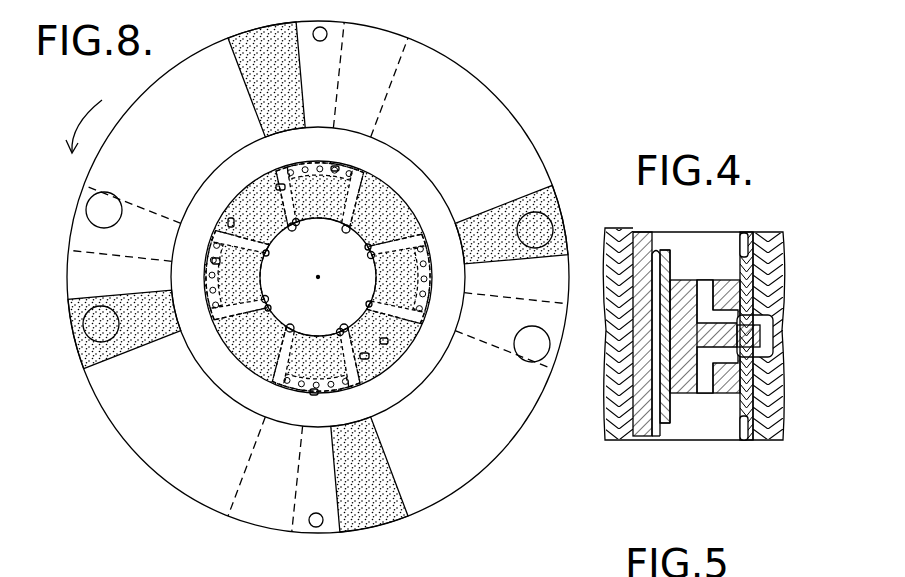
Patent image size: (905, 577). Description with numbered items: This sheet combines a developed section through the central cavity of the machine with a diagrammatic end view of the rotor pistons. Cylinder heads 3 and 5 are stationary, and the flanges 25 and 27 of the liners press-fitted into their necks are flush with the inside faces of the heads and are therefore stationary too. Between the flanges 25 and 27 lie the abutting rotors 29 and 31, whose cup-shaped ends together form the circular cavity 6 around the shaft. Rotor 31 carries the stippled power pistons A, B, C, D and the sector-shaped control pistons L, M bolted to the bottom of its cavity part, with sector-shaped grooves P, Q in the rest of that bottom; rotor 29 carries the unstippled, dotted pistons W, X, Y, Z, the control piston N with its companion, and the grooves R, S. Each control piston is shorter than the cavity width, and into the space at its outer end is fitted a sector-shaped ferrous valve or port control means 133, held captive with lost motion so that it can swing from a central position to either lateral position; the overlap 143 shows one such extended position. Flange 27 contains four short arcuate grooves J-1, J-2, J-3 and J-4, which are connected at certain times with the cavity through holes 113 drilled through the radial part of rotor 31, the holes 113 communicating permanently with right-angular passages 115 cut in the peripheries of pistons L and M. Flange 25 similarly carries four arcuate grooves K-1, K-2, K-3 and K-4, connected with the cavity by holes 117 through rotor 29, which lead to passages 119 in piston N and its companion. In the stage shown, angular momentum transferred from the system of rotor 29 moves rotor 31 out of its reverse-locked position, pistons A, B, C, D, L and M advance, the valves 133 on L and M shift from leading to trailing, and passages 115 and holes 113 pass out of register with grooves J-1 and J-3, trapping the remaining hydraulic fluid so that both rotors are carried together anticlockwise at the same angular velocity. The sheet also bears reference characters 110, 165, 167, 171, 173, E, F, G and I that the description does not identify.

In FIG. 4, the cylinder head 3 is at (610, 270).
In FIG. 4, the cylinder head 5 is at (782, 262).
In FIG. 4, the cavity 6 is at (737, 257).
In FIG. 4, the flange 25 is at (624, 232).
In FIG. 4, the flange 27 is at (762, 232).
In FIG. 4, the rotor 29 is at (658, 250).
In FIG. 8, the rotor 31 is at (236, 156).
In FIG. 4, the rotor 31 is at (752, 440).
In FIG. 8, the stator core 110 is at (336, 119).
In FIG. 8, the holes 113 is at (306, 165).
In FIG. 4, the holes 113 is at (745, 330).
In FIG. 8, the passages 115 is at (286, 176).
In FIG. 4, the passages 115 is at (708, 290).
In FIG. 8, the holes 117 is at (175, 272).
In FIG. 8, the passages 119 is at (400, 220).
In FIG. 8, the valve or port control means 133 is at (380, 215).
In FIG. 4, the valve or port control means 133 is at (672, 253).
In FIG. 4, the overlap 143 is at (671, 268).
In FIG. 8, the lead 165 is at (366, 251).
In FIG. 8, the lead 167 is at (293, 231).
In FIG. 8, the lead 171 is at (270, 256).
In FIG. 8, the lead 173 is at (353, 240).
In FIG. 8, the power piston A is at (250, 85).
In FIG. 8, the power piston B is at (140, 350).
In FIG. 8, the power piston C is at (392, 460).
In FIG. 8, the power piston D is at (500, 210).
In FIG. 8, the hole E is at (104, 192).
In FIG. 8, the direction of rotation F is at (84, 118).
In FIG. 8, the pin hole G is at (320, 42).
In FIG. 8, the hole I is at (105, 343).
In FIG. 8, the arcuate groove J-1 is at (370, 176).
In FIG. 4, the arcuate groove J-1 is at (745, 395).
In FIG. 8, the arcuate groove J-2 is at (235, 217).
In FIG. 8, the arcuate groove J-3 is at (268, 380).
In FIG. 8, the arcuate groove J-4 is at (412, 336).
In FIG. 8, the arcuate groove K-1 is at (424, 226).
In FIG. 8, the arcuate groove K-2 is at (291, 172).
In FIG. 8, the arcuate groove K-3 is at (213, 320).
In FIG. 8, the arcuate groove K-4 is at (347, 390).
In FIG. 8, the control piston L is at (336, 166).
In FIG. 8, the control piston M is at (314, 396).
In FIG. 8, the control piston N is at (212, 262).
In FIG. 8, the groove P is at (233, 218).
In FIG. 4, the groove P is at (745, 232).
In FIG. 8, the groove Q is at (388, 343).
In FIG. 4, the groove Q is at (745, 441).
In FIG. 8, the groove R is at (276, 187).
In FIG. 4, the groove R is at (654, 437).
In FIG. 8, the groove S is at (369, 358).
In FIG. 8, the power piston W is at (138, 204).
In FIG. 8, the power piston X is at (245, 465).
In FIG. 8, the power piston Y is at (493, 350).
In FIG. 8, the power piston Z is at (395, 80).